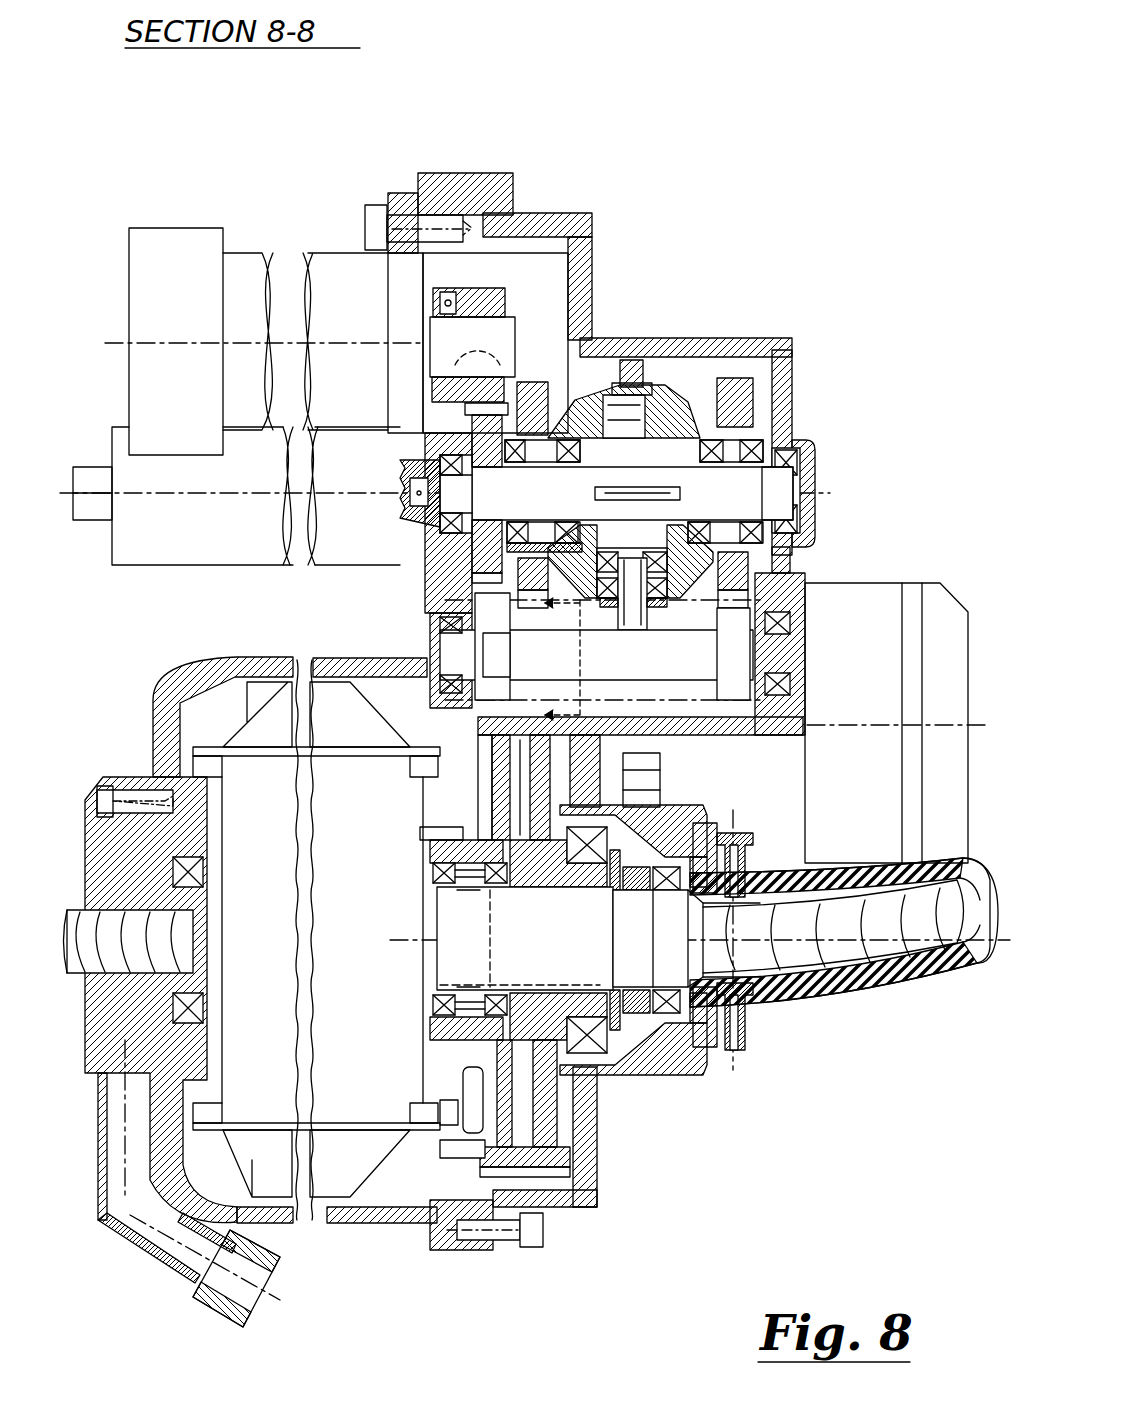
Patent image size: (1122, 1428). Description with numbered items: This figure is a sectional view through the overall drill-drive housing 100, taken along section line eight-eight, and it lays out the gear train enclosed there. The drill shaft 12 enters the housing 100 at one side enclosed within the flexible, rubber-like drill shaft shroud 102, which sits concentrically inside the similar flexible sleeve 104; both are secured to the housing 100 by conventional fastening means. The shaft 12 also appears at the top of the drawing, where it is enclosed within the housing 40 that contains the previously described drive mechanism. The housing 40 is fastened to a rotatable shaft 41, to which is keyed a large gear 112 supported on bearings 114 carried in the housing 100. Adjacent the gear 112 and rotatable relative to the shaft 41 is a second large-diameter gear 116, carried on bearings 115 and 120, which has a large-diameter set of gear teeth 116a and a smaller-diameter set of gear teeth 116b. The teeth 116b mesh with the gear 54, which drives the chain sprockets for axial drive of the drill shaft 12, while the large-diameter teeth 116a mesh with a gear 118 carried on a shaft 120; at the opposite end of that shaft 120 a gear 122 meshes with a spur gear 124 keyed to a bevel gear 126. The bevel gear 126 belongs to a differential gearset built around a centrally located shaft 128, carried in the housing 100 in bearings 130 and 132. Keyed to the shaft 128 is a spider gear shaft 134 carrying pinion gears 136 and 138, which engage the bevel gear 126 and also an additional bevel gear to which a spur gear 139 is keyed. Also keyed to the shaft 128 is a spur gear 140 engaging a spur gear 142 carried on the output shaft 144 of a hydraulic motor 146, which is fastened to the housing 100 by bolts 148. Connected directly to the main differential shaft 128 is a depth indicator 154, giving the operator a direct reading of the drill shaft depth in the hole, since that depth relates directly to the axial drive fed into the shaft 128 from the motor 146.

The drill shaft 12 is at (170, 930).
The housing 40 is at (363, 1157).
The rotatable shaft 41 is at (460, 957).
The gear 54 is at (447, 1153).
The housing 100 is at (590, 1207).
The drill shaft shroud 102 is at (987, 980).
The flexible sleeve 104 is at (897, 998).
The large gear 112 is at (543, 1150).
The bearings 114 is at (608, 1068).
The bearings 115 is at (503, 887).
The second large-diameter gear 116 is at (460, 1155).
The large-diameter set of gear teeth 116a is at (488, 1160).
The smaller-diameter set of gear teeth 116b is at (443, 827).
The gear 118 is at (497, 640).
The shaft 120 is at (448, 650).
The gear 122 is at (735, 663).
The spur gear 124 is at (790, 560).
The bevel gear 126 is at (775, 430).
The differential shaft 128 is at (788, 485).
The bearing 130 is at (812, 457).
The bearing 132 is at (458, 458).
The spider gear shaft 134 is at (665, 385).
The pinion gear 136 is at (600, 395).
The pinion gear 138 is at (560, 412).
The spur gear 139 is at (580, 345).
The spur gear 140 is at (483, 527).
The spur gear 142 is at (490, 275).
The output shaft 144 is at (505, 330).
The hydraulic motor 146 is at (252, 280).
The bolts 148 is at (365, 210).
The depth indicator 154 is at (213, 533).